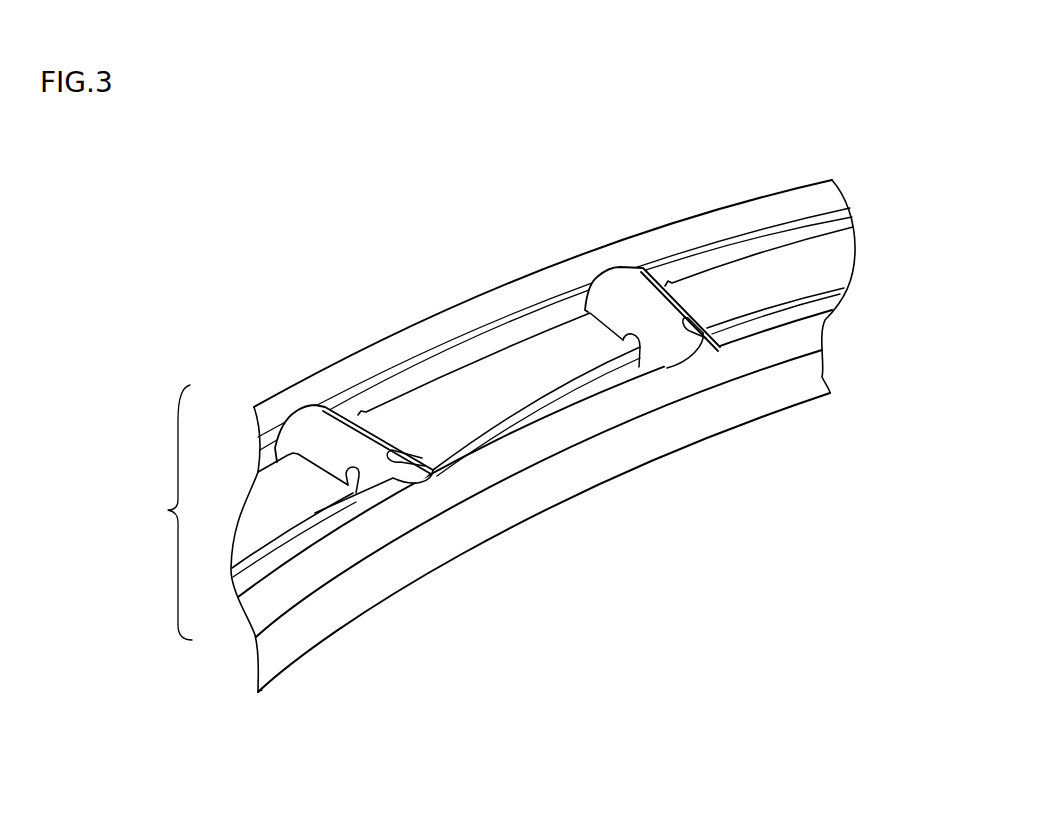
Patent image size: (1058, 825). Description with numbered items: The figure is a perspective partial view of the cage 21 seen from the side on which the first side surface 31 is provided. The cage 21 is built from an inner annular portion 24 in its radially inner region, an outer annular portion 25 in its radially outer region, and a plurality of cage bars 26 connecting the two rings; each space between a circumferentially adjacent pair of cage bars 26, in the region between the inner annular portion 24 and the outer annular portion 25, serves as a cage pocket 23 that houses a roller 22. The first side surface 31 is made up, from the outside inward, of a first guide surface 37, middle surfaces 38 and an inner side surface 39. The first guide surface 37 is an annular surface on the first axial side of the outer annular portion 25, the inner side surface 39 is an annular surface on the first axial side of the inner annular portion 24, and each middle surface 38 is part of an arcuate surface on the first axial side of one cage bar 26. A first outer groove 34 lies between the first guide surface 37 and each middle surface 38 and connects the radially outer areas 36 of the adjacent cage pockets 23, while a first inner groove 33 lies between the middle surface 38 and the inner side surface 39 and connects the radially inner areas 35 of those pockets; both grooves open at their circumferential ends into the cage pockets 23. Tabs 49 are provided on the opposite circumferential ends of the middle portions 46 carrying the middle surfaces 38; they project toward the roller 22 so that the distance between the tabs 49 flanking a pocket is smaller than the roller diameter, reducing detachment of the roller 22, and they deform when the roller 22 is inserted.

The cage 21 is at (610, 478).
The roller 22 is at (610, 283).
The cage pocket 23 is at (571, 295).
The inner annular portion 24 is at (288, 653).
The outer annular portion 25 is at (490, 288).
The cage bar 26 is at (743, 290).
The first side surface 31 is at (161, 512).
The first inner groove 33 is at (810, 310).
The first outer groove 34 is at (692, 262).
The radially inner area 35 is at (372, 500).
The radially outer area 36 is at (641, 268).
The first guide surface 37 is at (262, 421).
The middle surface 38 is at (825, 253).
The inner side surface 39 is at (263, 617).
The middle portion 46 is at (548, 445).
The tab 49 is at (350, 493).